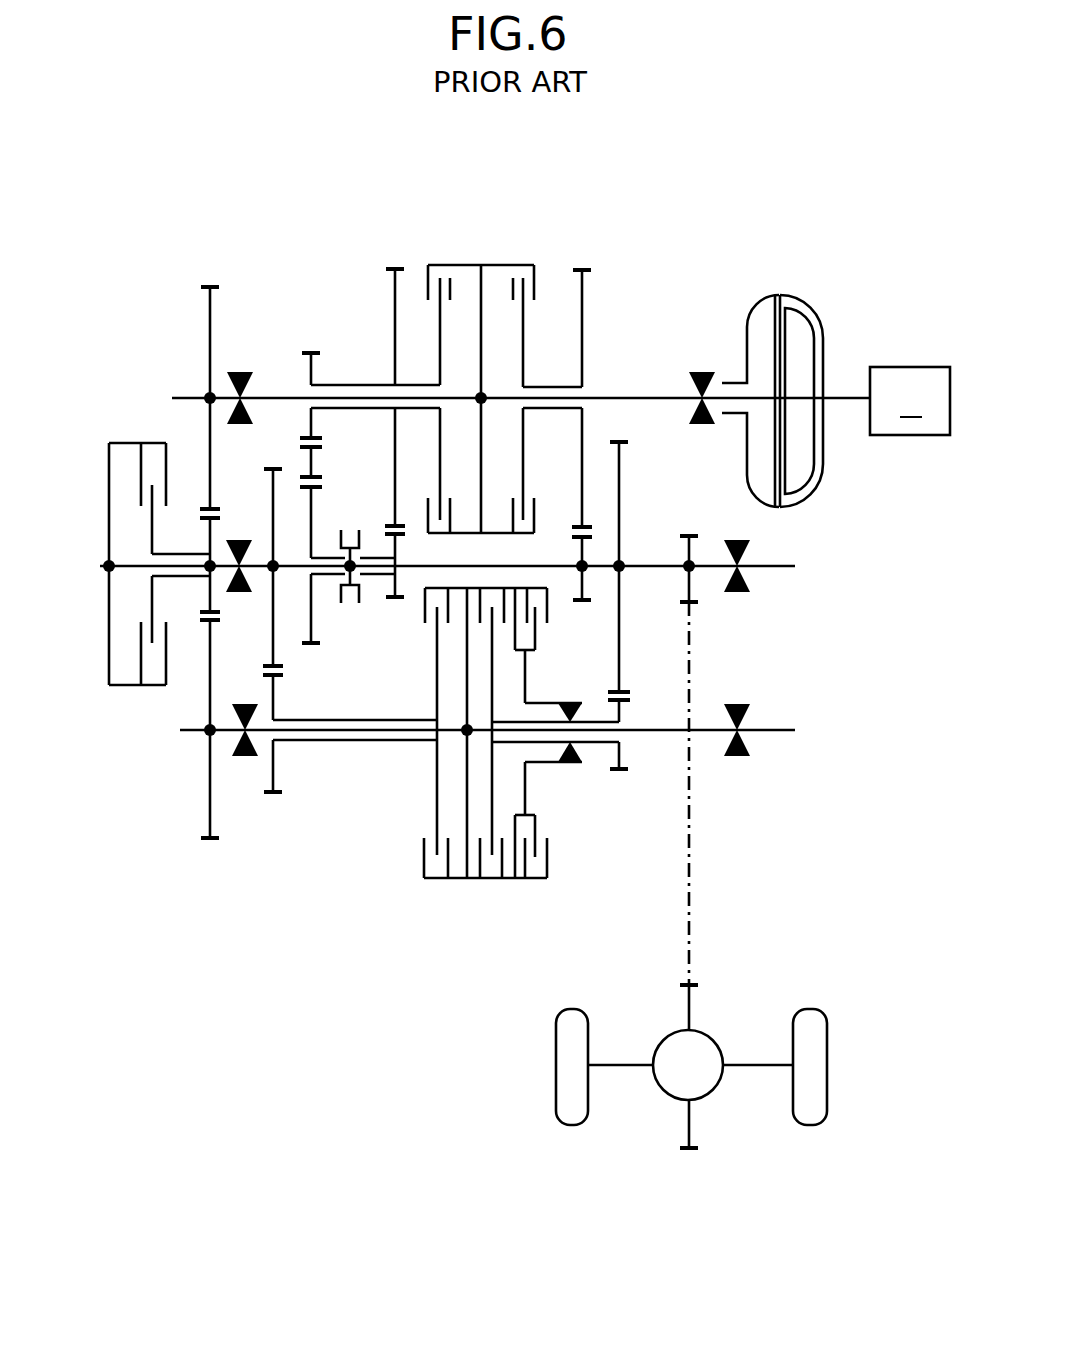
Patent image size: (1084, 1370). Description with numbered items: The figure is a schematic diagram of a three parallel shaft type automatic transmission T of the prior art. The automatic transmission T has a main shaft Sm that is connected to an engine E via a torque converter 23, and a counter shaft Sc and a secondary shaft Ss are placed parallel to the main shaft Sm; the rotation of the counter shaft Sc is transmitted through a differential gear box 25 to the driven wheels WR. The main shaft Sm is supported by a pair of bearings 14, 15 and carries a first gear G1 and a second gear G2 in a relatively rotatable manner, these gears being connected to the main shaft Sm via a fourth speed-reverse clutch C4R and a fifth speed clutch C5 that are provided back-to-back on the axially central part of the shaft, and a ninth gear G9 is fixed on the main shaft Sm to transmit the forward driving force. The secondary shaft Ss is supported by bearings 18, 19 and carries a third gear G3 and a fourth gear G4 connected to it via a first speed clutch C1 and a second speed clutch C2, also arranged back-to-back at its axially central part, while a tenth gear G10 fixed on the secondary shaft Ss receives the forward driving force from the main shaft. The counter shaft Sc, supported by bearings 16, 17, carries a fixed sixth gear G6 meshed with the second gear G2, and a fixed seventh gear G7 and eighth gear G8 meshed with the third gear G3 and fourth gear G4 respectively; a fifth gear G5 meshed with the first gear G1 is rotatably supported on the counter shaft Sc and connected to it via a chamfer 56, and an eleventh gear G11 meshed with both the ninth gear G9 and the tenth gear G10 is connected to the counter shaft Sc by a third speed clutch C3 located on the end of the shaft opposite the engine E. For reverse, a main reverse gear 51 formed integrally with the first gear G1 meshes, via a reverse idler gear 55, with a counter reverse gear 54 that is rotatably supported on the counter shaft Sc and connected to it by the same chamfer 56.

The bearing 14 is at (702, 364).
The bearing 15 is at (240, 366).
The bearing 16 is at (742, 544).
The bearing 17 is at (239, 534).
The bearing 18 is at (739, 764).
The bearing 19 is at (245, 764).
The torque converter 23 is at (812, 288).
The differential gear box 25 is at (710, 1053).
The main reverse gear 51 is at (311, 351).
The counter reverse gear 54 is at (311, 645).
The reverse idler gear 55 is at (314, 448).
The chamfer 56 is at (351, 546).
The main shaft Sm is at (617, 396).
The counter shaft Sc is at (655, 565).
The secondary shaft Ss is at (648, 729).
The first gear G1 is at (395, 267).
The second gear G2 is at (583, 268).
The third gear G3 is at (619, 771).
The fourth gear G4 is at (274, 794).
The fifth gear G5 is at (395, 599).
The sixth gear G6 is at (581, 602).
The seventh gear G7 is at (620, 443).
The eighth gear G8 is at (273, 467).
The ninth gear G9 is at (211, 286).
The tenth gear G10 is at (210, 840).
The eleventh gear G11 is at (214, 613).
The first speed clutch C1 is at (525, 894).
The second speed clutch C2 is at (433, 894).
The third speed clutch C3 is at (137, 698).
The fourth speed-reverse clutch C4R is at (435, 254).
The fifth speed clutch C5 is at (522, 254).
The automatic transmission T is at (584, 204).
The engine E is at (910, 401).
The right driven wheel WR is at (808, 1028).